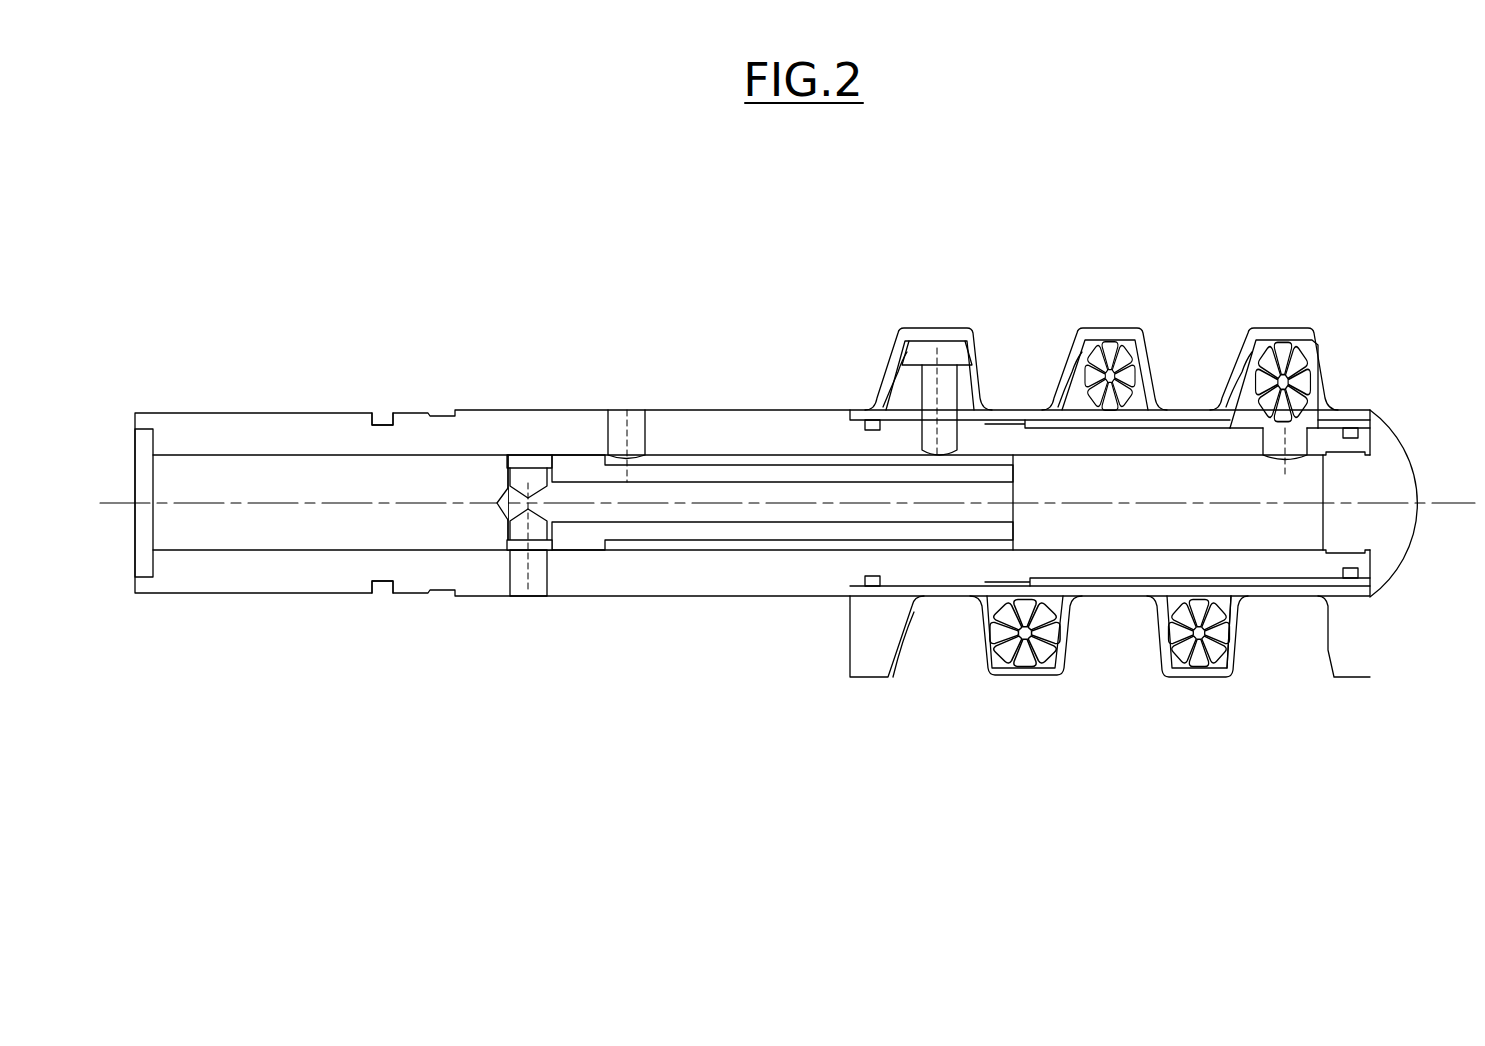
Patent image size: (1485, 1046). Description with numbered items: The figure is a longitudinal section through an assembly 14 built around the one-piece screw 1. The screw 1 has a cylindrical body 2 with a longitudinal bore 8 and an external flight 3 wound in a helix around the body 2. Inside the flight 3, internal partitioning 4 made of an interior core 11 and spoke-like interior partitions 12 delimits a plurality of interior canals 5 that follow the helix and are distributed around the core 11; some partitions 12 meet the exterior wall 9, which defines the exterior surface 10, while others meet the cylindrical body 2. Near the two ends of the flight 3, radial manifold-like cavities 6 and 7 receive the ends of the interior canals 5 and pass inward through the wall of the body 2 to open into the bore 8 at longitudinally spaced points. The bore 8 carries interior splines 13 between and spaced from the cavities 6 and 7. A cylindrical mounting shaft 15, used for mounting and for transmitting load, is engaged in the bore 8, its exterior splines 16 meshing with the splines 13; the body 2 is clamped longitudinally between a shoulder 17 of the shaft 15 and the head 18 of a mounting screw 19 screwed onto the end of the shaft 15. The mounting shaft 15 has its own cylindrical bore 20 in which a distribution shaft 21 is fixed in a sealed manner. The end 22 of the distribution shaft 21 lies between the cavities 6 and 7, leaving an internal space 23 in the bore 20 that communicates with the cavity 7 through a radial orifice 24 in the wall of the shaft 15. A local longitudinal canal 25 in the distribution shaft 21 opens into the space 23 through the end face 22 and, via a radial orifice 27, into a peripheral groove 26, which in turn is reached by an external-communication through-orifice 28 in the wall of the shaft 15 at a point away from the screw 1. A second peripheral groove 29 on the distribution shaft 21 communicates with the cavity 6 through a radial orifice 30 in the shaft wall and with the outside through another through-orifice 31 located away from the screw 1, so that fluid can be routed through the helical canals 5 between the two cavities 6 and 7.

The screw 1 is at (855, 317).
The cylindrical body 2 is at (1192, 408).
The external flight 3 is at (1110, 328).
The internal partitioning 4 is at (1047, 655).
The interior canals 5 is at (983, 650).
The manifold-like cavity 6 is at (951, 383).
The manifold-like cavity 7 is at (1305, 417).
The longitudinal bore 8 is at (880, 436).
The exterior wall 9 is at (1237, 623).
The exterior surface 10 is at (1237, 655).
The interior core 11 is at (1170, 625).
The interior partitions 12 is at (1220, 672).
The splines 13 is at (1160, 410).
The assembly 14 is at (693, 338).
The mounting shaft 15 is at (445, 420).
The exterior splines 16 is at (1127, 560).
The shoulder 17 is at (853, 598).
The head 18 is at (1398, 453).
The mounting screw 19 is at (1340, 530).
The longitudinal bore 20 is at (280, 545).
The distribution shaft 21 is at (277, 462).
The end 22 is at (1015, 470).
The internal space 23 is at (1244, 520).
The radial orifice 24 is at (1292, 448).
The longitudinal canal 25 is at (673, 510).
The peripheral groove 26 is at (538, 545).
The radial orifice 27 is at (517, 527).
The external-communication radial through-orifice 28 is at (522, 580).
The peripheral groove 29 is at (702, 452).
The radial orifice 30 is at (985, 410).
The external-communication radial through-orifice 31 is at (615, 422).